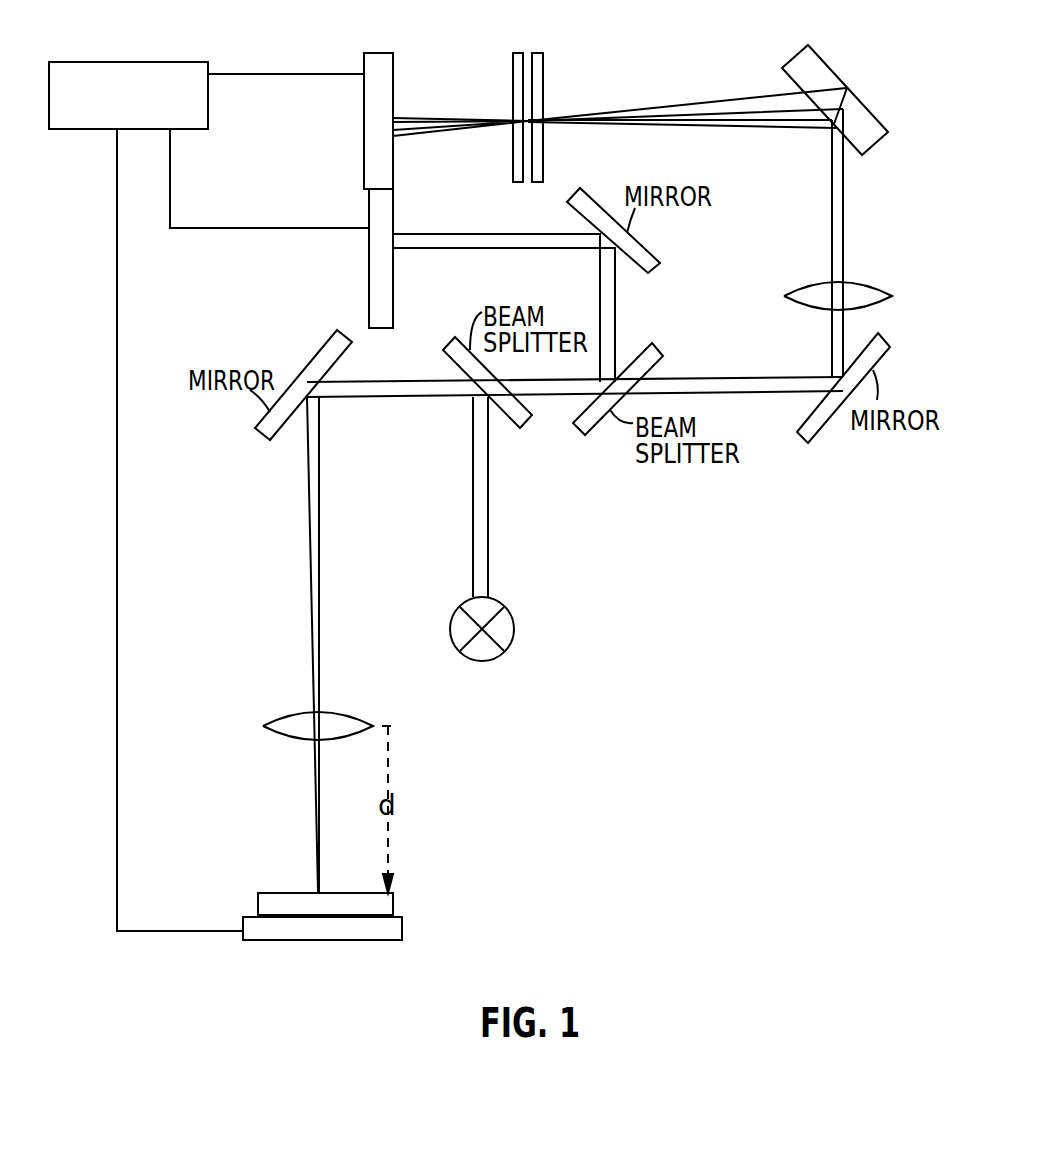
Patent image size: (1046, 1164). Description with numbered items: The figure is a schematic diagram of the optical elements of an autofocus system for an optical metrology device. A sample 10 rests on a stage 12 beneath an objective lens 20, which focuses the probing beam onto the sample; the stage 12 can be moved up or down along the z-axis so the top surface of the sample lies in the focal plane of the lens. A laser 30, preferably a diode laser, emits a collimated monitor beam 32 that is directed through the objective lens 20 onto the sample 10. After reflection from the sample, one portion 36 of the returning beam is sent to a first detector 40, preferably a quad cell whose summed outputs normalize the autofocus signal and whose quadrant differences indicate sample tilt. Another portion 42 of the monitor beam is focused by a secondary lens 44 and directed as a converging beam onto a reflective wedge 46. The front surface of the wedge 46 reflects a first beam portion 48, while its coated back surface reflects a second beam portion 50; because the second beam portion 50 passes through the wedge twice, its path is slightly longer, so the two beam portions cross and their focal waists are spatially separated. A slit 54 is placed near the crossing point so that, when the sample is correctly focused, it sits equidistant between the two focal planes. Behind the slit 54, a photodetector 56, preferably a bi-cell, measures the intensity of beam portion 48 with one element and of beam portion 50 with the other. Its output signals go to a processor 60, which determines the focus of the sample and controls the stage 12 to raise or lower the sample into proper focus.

The sample 10 is at (283, 892).
The stage 12 is at (326, 942).
The objective lens 20 is at (283, 713).
The laser 30 is at (510, 632).
The monitor beam 32 is at (488, 512).
The reflected beam portion 36 is at (492, 233).
The first detector 40 is at (393, 273).
The monitor beam portion 42 is at (843, 202).
The secondary lens 44 is at (862, 283).
The reflective wedge 46 is at (820, 58).
The first beam portion 48 is at (770, 132).
The second beam portion 50 is at (693, 102).
The slit 54 is at (540, 53).
The photodetector 56 is at (393, 66).
The processor 60 is at (125, 62).